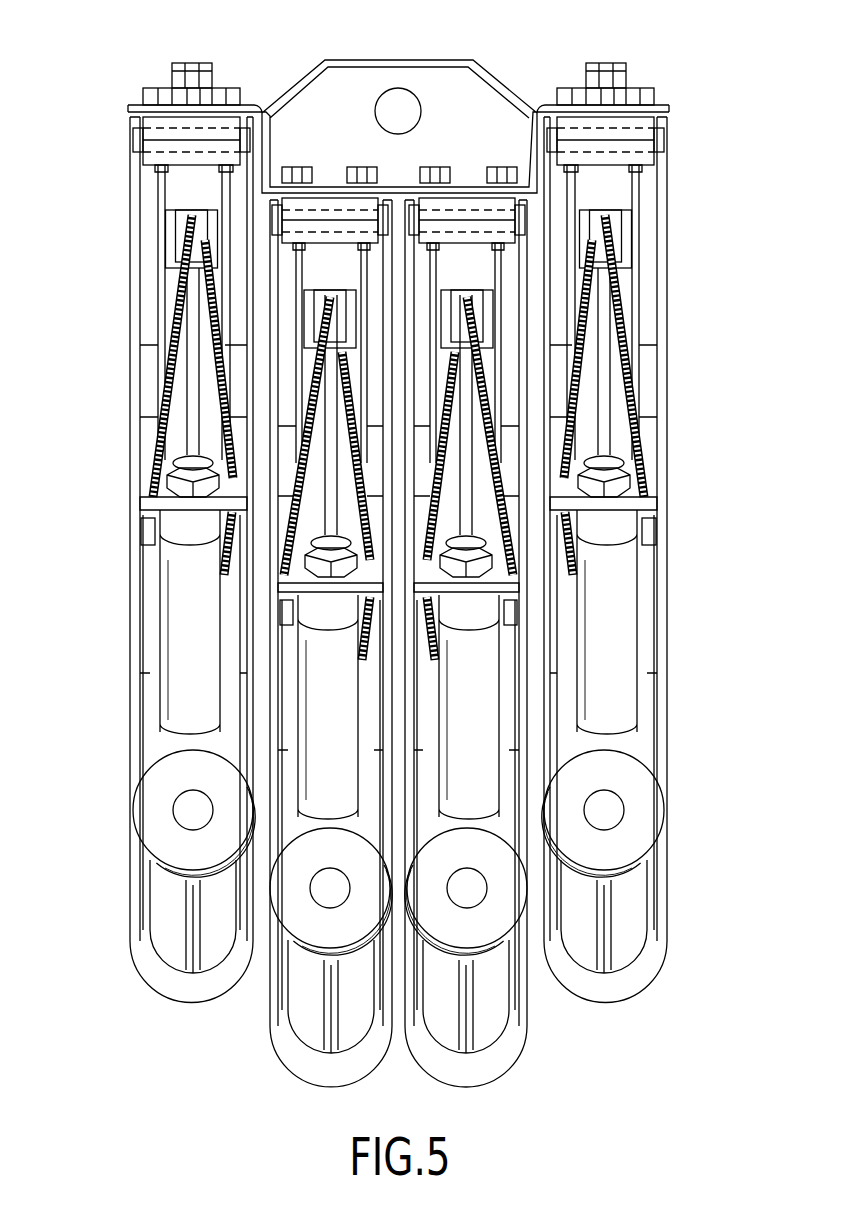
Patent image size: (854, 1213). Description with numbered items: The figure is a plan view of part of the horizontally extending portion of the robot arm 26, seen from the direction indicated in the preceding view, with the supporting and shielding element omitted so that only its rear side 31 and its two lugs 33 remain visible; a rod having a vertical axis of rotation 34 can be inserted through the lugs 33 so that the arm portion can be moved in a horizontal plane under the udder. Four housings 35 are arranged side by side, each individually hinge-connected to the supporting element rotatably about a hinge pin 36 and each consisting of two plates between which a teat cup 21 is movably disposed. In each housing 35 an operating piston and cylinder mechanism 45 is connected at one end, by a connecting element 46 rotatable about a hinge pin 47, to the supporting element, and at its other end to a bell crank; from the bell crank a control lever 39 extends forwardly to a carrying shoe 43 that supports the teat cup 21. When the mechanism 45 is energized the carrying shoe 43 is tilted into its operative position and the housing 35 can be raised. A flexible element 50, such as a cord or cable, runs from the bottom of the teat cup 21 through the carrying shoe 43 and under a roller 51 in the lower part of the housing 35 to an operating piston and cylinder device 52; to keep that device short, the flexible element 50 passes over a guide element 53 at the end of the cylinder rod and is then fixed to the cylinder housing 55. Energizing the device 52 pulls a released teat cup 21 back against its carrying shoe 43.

The teat cup 21 is at (155, 912).
The robot arm 26 is at (698, 194).
The rear side 31 is at (405, 187).
The lugs 33 is at (486, 88).
The vertical axis of rotation 34 is at (376, 108).
The housing 35 is at (138, 690).
The hinge pin 36 is at (150, 127).
The control lever 39 is at (148, 565).
The carrying shoe 43 is at (160, 990).
The operating piston and cylinder mechanism 45 is at (148, 368).
The connecting element 46 is at (160, 249).
The hinge pin 47 is at (176, 76).
The flexible element 50 is at (155, 460).
The roller 51 is at (650, 780).
The operating piston and cylinder device 52 is at (628, 623).
The guide element 53 is at (188, 213).
The cylinder housing 55 is at (173, 626).